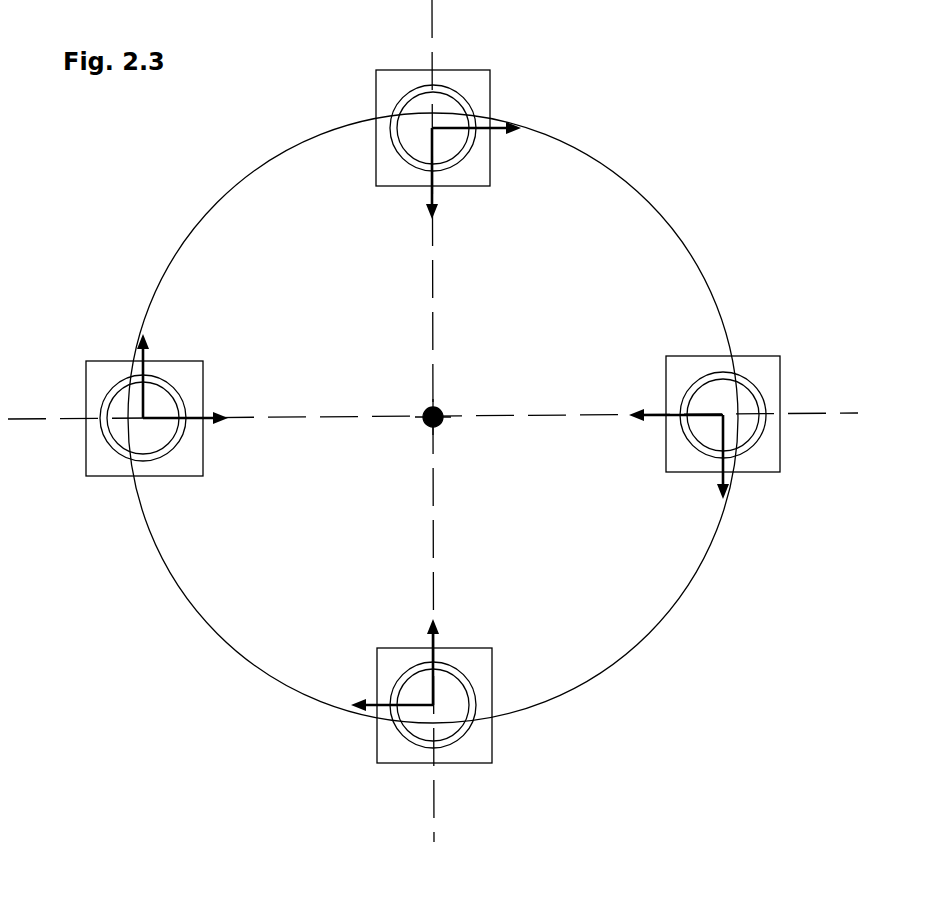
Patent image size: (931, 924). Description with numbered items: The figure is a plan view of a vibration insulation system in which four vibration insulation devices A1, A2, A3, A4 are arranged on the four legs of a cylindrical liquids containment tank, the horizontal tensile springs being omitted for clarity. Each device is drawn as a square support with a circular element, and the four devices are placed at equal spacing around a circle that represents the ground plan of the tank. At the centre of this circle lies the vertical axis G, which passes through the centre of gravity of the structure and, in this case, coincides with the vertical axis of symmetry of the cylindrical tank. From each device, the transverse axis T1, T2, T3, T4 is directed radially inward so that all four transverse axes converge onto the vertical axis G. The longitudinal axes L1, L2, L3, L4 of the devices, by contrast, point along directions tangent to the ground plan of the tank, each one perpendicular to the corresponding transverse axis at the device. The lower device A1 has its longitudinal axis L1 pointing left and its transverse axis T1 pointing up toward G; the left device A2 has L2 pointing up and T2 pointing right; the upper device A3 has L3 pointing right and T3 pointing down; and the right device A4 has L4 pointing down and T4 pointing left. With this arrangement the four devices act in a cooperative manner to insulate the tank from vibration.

The vibration insulation device A1 is at (468, 763).
The vibration insulation device A2 is at (113, 478).
The vibration insulation device A3 is at (463, 68).
The vibration insulation device A4 is at (757, 356).
The vertical axis through the centre of gravity G is at (441, 395).
The longitudinal axis L1 is at (382, 685).
The longitudinal axis L2 is at (157, 369).
The longitudinal axis L3 is at (483, 151).
The longitudinal axis L4 is at (701, 468).
The transverse axis T1 is at (412, 653).
The transverse axis T2 is at (207, 396).
The transverse axis T3 is at (412, 181).
The transverse axis T4 is at (672, 394).